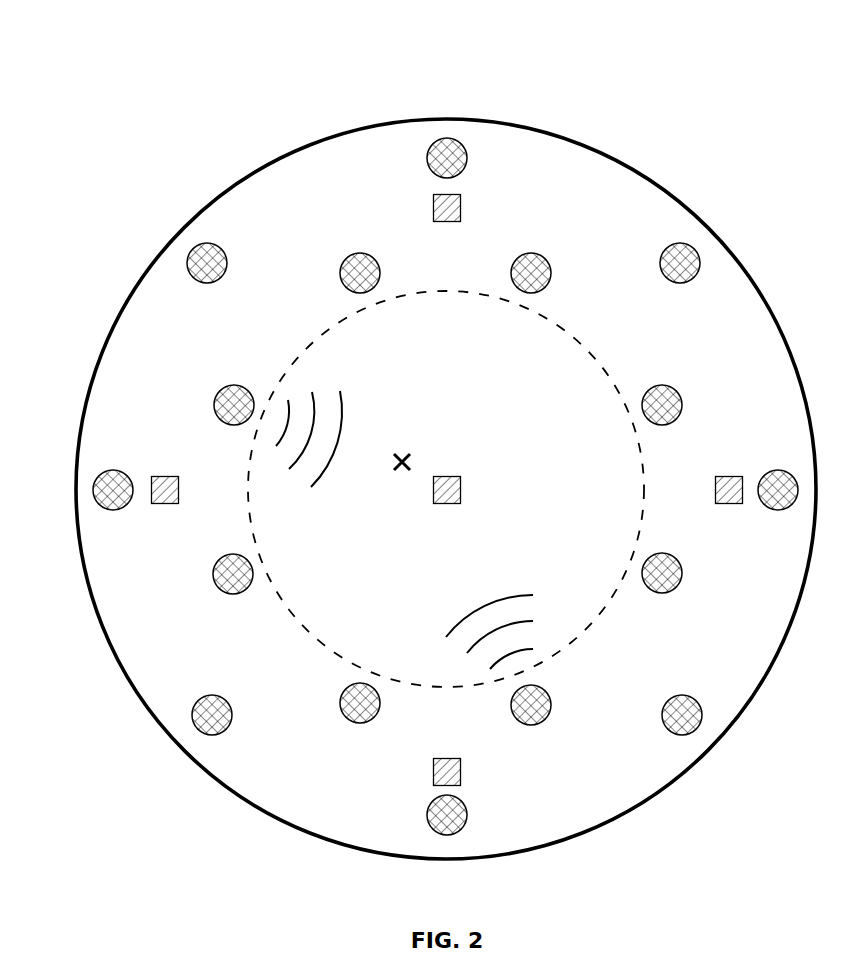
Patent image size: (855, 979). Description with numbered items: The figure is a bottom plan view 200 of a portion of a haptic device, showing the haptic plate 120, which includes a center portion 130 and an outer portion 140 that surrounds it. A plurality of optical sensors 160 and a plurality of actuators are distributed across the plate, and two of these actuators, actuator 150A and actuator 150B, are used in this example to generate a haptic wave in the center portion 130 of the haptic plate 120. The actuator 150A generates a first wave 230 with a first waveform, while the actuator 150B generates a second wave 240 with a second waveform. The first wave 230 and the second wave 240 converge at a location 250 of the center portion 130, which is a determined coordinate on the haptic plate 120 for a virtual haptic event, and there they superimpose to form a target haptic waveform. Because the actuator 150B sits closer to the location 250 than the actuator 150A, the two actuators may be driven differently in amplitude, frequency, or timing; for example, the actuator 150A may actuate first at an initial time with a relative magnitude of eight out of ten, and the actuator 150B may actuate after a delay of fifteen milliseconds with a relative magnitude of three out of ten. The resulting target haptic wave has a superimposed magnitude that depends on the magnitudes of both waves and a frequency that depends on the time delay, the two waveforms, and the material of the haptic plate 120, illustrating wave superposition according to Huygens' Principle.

The bottom plan view 200 is at (137, 27).
The haptic plate 120 is at (742, 260).
The center portion 130 is at (318, 622).
The outer portion 140 is at (273, 667).
The optical sensors 160 is at (461, 209).
The actuator 150A is at (535, 723).
The actuator 150B is at (214, 405).
The first wave 230 is at (534, 621).
The second wave 240 is at (312, 392).
The location 250 is at (403, 455).